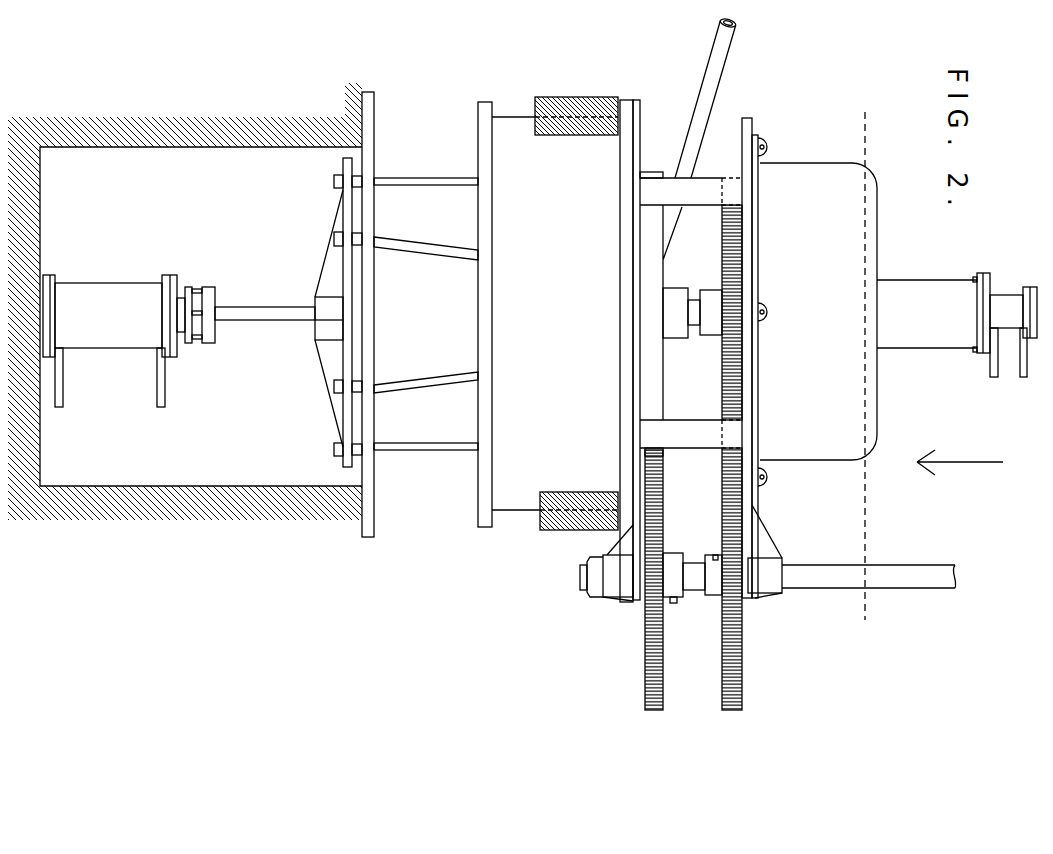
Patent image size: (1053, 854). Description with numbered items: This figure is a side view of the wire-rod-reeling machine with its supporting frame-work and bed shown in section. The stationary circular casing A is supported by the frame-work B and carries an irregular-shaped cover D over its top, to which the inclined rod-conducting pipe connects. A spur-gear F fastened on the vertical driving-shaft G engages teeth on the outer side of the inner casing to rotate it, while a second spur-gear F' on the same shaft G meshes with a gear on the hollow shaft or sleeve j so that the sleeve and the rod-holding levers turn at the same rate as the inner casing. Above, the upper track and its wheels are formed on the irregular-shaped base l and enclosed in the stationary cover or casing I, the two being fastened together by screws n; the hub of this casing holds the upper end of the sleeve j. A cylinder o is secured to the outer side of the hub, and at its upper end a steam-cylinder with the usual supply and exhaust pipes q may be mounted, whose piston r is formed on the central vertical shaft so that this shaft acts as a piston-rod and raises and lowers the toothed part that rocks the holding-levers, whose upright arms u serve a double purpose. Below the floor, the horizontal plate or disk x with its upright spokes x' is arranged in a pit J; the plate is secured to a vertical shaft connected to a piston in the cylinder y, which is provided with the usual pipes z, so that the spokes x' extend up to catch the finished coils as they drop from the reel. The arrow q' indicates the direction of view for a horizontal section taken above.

The stationary circular casing A is at (515, 495).
The frame-work B is at (580, 103).
The cover D is at (640, 128).
The spur-gear F is at (665, 580).
The spur-gear F' is at (743, 579).
The vertical driving-shaft G is at (900, 575).
The cover or casing I is at (810, 445).
The hollow shaft or sleeve j is at (692, 322).
The base l is at (752, 505).
The screws n is at (767, 147).
The cylinder o is at (935, 330).
The steam supply and exhaust pipes q is at (872, 366).
The direction arrow q' is at (960, 467).
The piston r is at (1012, 303).
The upright arms u is at (727, 48).
The horizontal plate or disk x is at (333, 312).
The upright spokes or arms x' is at (426, 332).
The cylinder y is at (130, 300).
The pipes z is at (60, 392).
The pit J is at (239, 419).